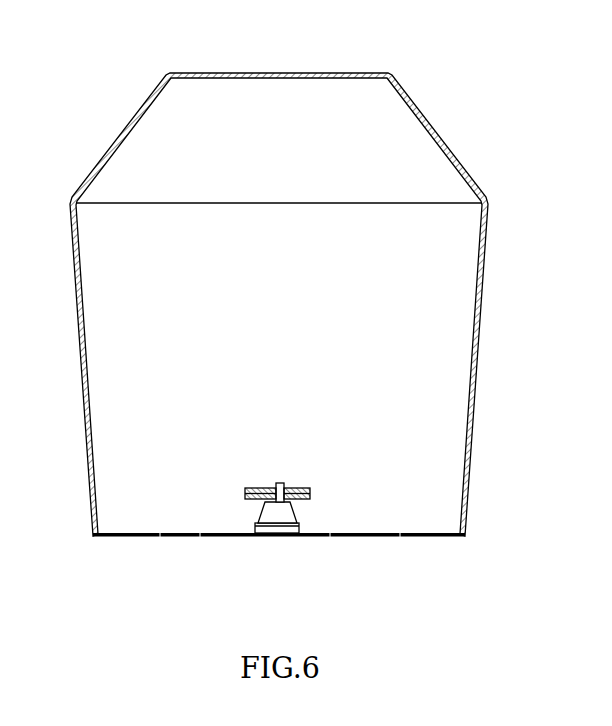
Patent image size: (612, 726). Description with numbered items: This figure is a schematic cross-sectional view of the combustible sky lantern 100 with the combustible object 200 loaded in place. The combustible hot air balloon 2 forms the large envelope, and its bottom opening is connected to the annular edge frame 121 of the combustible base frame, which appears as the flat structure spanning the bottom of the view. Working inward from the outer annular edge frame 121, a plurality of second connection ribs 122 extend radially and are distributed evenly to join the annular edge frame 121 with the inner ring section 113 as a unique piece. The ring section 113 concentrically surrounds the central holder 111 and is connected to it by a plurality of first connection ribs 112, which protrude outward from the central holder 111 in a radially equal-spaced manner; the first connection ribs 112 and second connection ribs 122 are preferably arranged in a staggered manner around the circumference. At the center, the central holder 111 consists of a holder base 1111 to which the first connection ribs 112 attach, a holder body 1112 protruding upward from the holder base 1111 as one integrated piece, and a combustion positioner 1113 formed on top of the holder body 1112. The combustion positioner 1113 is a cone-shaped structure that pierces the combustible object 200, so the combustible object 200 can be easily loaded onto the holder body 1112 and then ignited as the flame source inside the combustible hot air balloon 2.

The combustible sky lantern 100 is at (86, 102).
The combustible hot air balloon 2 is at (484, 280).
The central holder 111 is at (275, 540).
The holder base 1111 is at (256, 527).
The holder body 1112 is at (298, 513).
The combustion positioner 1113 is at (280, 482).
The first connection ribs 112 is at (220, 533).
The ring section 113 is at (365, 541).
The annular edge frame 121 is at (93, 542).
The second connection ribs 122 is at (133, 542).
The combustible object 200 is at (322, 490).